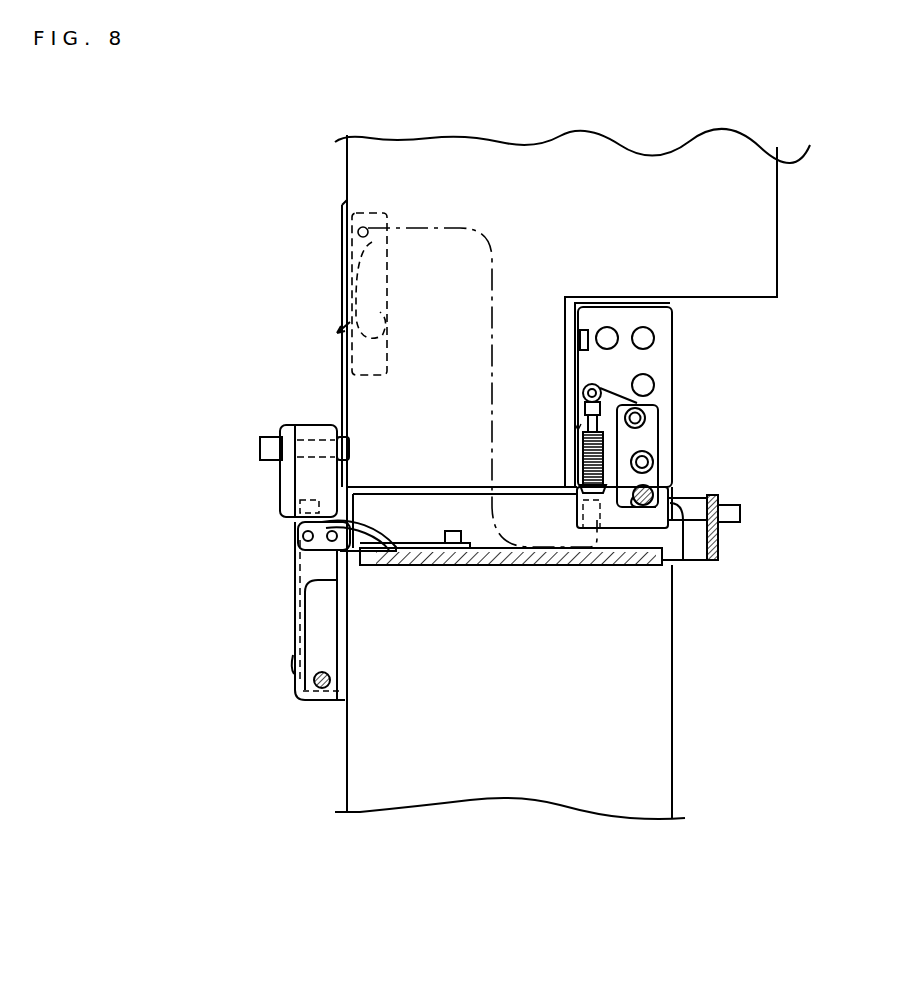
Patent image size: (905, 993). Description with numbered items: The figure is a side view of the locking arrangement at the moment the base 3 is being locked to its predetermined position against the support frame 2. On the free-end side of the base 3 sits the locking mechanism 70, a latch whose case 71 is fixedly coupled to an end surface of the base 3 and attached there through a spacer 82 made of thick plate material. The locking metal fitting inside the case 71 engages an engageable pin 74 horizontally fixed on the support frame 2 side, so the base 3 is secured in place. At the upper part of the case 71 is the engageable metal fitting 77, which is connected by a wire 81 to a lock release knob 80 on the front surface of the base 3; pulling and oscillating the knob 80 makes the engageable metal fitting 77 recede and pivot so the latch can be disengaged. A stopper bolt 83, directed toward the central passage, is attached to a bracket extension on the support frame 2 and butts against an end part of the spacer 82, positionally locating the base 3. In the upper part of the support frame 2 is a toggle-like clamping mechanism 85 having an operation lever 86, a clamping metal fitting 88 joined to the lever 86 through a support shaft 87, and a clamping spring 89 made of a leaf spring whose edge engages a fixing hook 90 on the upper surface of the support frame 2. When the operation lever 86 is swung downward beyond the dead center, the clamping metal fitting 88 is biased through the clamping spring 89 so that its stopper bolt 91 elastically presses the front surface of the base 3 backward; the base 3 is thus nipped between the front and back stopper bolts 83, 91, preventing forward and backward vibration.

The support frame 2 is at (672, 722).
The base 3 is at (347, 170).
The locking mechanism 70 is at (660, 432).
The case 71 is at (660, 455).
The engageable pin 74 is at (652, 494).
The engageable metal fitting 77 is at (602, 385).
The lock release knob 80 is at (352, 355).
The wire 81 is at (492, 376).
The spacer 82 is at (673, 336).
The stopper bolt 83 is at (672, 562).
The clamping mechanism 85 is at (305, 629).
The operation lever 86 is at (291, 660).
The support shaft 87 is at (323, 690).
The clamping metal fitting 88 is at (300, 482).
The clamping spring 89 is at (386, 531).
The fixing hook 90 is at (379, 545).
The stopper bolt 91 is at (345, 435).